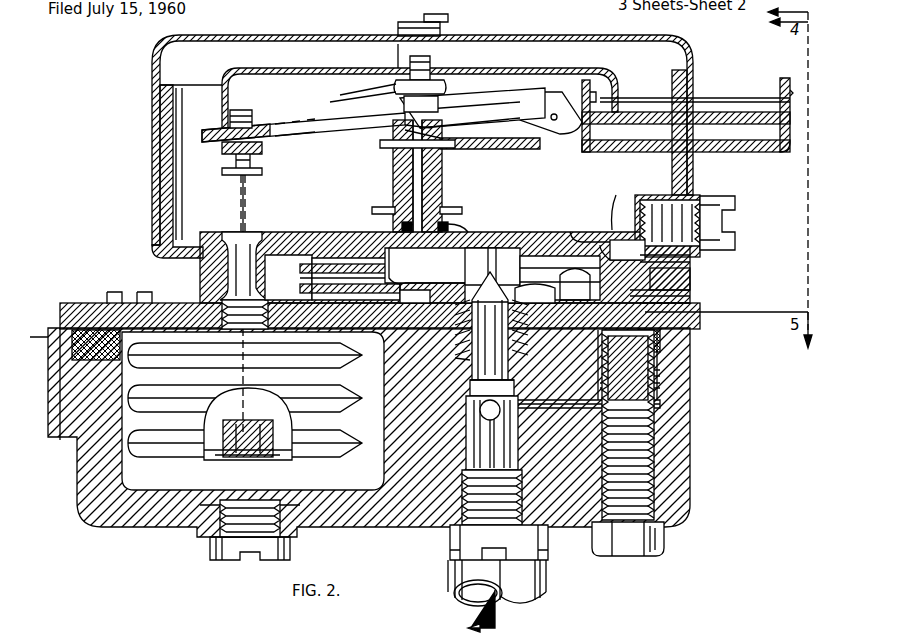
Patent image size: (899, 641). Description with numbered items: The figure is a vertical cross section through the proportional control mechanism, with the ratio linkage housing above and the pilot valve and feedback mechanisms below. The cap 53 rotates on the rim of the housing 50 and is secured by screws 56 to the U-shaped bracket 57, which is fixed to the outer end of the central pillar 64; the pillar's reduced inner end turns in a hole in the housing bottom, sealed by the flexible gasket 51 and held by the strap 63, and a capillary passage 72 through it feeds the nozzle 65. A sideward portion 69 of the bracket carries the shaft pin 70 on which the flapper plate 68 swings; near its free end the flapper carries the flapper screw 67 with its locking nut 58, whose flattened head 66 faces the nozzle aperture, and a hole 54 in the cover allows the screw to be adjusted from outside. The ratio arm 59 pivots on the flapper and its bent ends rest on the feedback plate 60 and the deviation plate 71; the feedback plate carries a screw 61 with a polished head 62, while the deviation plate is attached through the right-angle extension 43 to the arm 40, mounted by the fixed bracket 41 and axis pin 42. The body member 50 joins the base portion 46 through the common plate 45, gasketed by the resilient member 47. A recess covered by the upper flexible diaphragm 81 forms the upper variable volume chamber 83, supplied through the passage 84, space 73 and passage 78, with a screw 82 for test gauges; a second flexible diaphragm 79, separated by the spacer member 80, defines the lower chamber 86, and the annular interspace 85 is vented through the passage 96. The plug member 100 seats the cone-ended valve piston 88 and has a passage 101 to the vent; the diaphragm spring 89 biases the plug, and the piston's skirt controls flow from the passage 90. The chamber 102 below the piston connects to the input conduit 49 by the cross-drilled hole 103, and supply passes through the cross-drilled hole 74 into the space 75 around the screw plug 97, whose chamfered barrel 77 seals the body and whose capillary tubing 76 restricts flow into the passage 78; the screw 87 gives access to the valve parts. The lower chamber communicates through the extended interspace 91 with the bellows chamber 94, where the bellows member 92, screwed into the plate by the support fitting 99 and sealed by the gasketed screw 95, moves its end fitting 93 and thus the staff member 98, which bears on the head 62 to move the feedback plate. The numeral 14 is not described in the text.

The valve bore 14 is at (492, 276).
The arm 40 is at (758, 116).
The fixed bracket 41 is at (771, 153).
The axis pin 42 is at (729, 98).
The right-angle extension 43 is at (703, 112).
The common plate 45 is at (84, 304).
The base portion 46 is at (80, 504).
The resilient member 47 is at (72, 336).
The input pressure conduit 49 is at (540, 576).
The housing 50 is at (160, 186).
The flexible gasket 51 is at (456, 234).
The cap 53 is at (240, 36).
The hole in cover 54 is at (434, 24).
The screws 56 is at (398, 30).
The U-shaped bracket 57 is at (404, 52).
The locking nut 58 is at (394, 100).
The ratio arm 59 is at (285, 75).
The feedback plate 60 is at (320, 128).
The screw 61 is at (234, 162).
The feedback bearing plate 62 is at (256, 175).
The strap 63 is at (374, 212).
The central pillar 64 is at (394, 184).
The nozzle 65 is at (404, 138).
The flattened head 66 is at (404, 110).
The flapper screw 67 is at (432, 62).
The flapper plate 68 is at (495, 94).
The sidewardly extending portion 69 is at (488, 146).
The shaft pin 70 is at (556, 120).
The deviation plate 71 is at (581, 123).
The capillary passage 72 is at (424, 256).
The space 73 is at (612, 194).
The cross-drilled hole 74 is at (590, 394).
The space 75 is at (682, 385).
The capillary tubing 76 is at (660, 372).
The chamfered barrel portion 77 is at (657, 348).
The passage 78 is at (668, 310).
The flexible diaphragm 79 is at (670, 294).
The spacer member 80 is at (672, 280).
The flexible diaphragm 81 is at (664, 262).
The screw 82 is at (722, 212).
The variable volume chamber 83 is at (526, 250).
The passage 84 is at (578, 232).
The annular interspace 85 is at (556, 256).
The second variable volume chamber 86 is at (540, 338).
The screw 87 is at (462, 542).
The valve piston 88 is at (504, 404).
The diaphragm spring 89 is at (456, 334).
The passage 90 is at (456, 362).
The extended interspace 91 is at (396, 333).
The bellows member 92 is at (165, 452).
The recessed end fitting 93 is at (224, 424).
The bellows chamber 94 is at (170, 510).
The gasketed screw 95 is at (216, 550).
The passage 96 is at (312, 286).
The screw plug 97 is at (656, 542).
The staff member 98 is at (245, 218).
The support fitting 99 is at (230, 280).
The plug member 100 is at (535, 295).
The passage 101 is at (400, 296).
The chamber 102 is at (470, 388).
The cross-drilled hole 103 is at (480, 410).